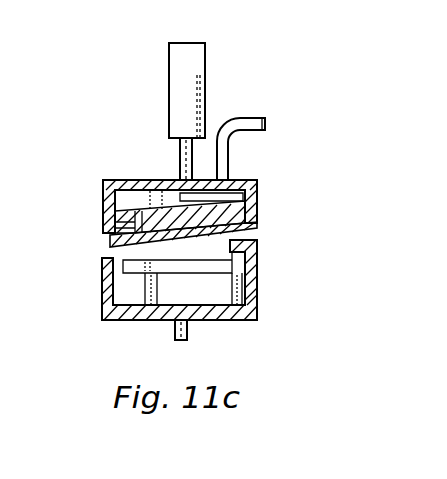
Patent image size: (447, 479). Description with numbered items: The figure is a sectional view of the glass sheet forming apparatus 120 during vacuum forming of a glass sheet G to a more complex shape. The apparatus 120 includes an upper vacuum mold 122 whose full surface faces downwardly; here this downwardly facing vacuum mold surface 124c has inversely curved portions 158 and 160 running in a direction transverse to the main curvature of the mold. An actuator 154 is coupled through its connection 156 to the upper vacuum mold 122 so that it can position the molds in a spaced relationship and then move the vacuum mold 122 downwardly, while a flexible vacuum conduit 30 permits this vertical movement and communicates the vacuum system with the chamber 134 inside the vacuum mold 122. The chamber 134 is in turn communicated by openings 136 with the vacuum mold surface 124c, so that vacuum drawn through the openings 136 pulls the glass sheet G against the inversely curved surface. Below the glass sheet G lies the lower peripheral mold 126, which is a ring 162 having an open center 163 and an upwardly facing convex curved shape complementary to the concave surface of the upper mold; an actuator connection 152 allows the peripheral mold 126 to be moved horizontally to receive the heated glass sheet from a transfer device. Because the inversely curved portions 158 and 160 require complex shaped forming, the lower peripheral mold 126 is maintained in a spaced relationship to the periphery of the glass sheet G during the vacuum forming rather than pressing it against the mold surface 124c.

The actuator 154 is at (199, 85).
The connection 156 is at (176, 181).
The vacuum conduit 30 is at (248, 118).
The apparatus 120 is at (286, 158).
The chamber 134 is at (246, 181).
The vacuum mold 122 is at (265, 190).
The openings 136 is at (250, 213).
The vacuum mold surface 124c is at (178, 212).
The inversely curved portion 160 is at (122, 192).
The inversely curved portion 158 is at (250, 233).
The glass sheet G is at (108, 243).
The ring 162 is at (254, 246).
The peripheral mold 126 is at (261, 299).
The open center 163 is at (173, 268).
The actuator connection 152 is at (174, 335).